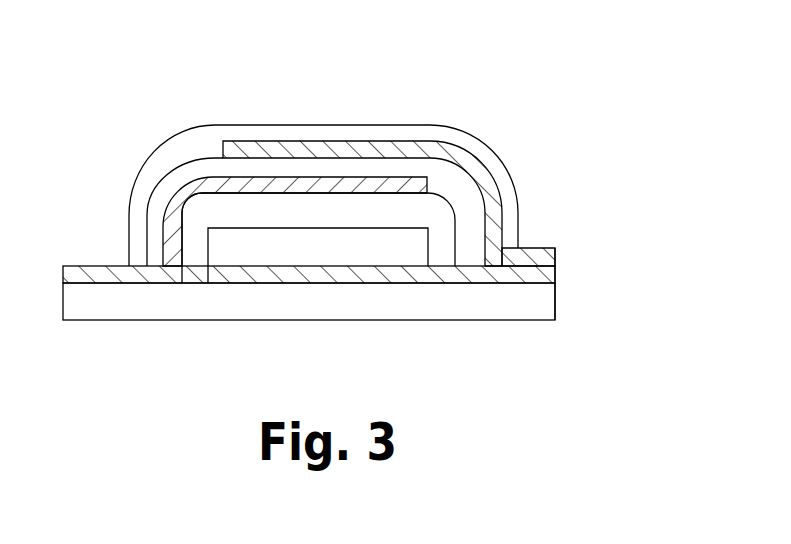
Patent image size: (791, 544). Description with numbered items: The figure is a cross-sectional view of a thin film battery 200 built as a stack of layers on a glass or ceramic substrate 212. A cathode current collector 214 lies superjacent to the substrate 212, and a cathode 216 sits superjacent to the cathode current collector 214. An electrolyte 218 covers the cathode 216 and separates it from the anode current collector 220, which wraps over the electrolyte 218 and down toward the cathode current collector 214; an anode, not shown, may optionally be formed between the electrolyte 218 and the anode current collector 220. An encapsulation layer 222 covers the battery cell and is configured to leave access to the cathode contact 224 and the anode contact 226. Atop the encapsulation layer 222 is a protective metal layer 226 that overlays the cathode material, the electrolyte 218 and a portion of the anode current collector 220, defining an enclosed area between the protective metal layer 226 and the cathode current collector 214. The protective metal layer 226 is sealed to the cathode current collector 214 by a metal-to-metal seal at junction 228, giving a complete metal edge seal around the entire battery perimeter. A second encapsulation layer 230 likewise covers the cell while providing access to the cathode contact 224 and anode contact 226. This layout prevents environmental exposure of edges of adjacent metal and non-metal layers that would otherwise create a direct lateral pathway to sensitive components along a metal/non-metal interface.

The thin film battery 200 is at (452, 68).
The glass or ceramic substrate 212 is at (354, 308).
The cathode current collector 214 is at (263, 275).
The cathode 216 is at (338, 255).
The electrolyte 218 is at (338, 221).
The anode current collector 220 is at (194, 190).
The encapsulation layer 222 is at (213, 168).
The cathode contact 224 is at (538, 234).
The protective metal layer 226 is at (97, 251).
The junction 228 is at (570, 269).
The second encapsulation layer 230 is at (322, 140).